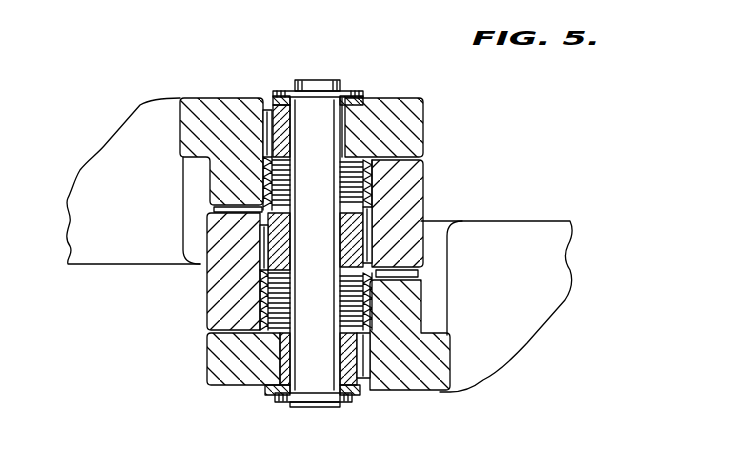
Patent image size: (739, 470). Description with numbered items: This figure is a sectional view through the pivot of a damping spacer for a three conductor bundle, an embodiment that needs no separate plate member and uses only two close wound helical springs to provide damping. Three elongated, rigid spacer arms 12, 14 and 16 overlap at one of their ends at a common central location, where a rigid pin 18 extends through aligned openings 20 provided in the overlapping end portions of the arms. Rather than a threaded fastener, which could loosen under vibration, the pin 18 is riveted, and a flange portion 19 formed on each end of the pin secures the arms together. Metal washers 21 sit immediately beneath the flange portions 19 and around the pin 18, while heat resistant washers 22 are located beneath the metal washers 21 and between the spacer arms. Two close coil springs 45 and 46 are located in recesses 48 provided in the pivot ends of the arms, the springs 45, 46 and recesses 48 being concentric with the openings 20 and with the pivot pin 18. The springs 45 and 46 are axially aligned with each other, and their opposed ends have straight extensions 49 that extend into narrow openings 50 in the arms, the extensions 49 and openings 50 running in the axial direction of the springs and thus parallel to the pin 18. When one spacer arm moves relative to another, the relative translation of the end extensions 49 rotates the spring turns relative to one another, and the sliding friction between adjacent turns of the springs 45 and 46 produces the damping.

The spacer arm 12 is at (100, 162).
The spacer arm 14 is at (207, 297).
The spacer arm 16 is at (523, 333).
The rigid pin 18 is at (307, 380).
The flange portion 19 is at (340, 87).
The opening 20 is at (345, 119).
The metal washer 21 is at (269, 98).
The heat resistant washer 22 is at (358, 96).
The close wound helical spring 45 is at (259, 189).
The close wound helical spring 46 is at (258, 297).
The recess 48 is at (372, 168).
The straight extension 49 is at (263, 133).
The narrow opening 50 is at (268, 100).